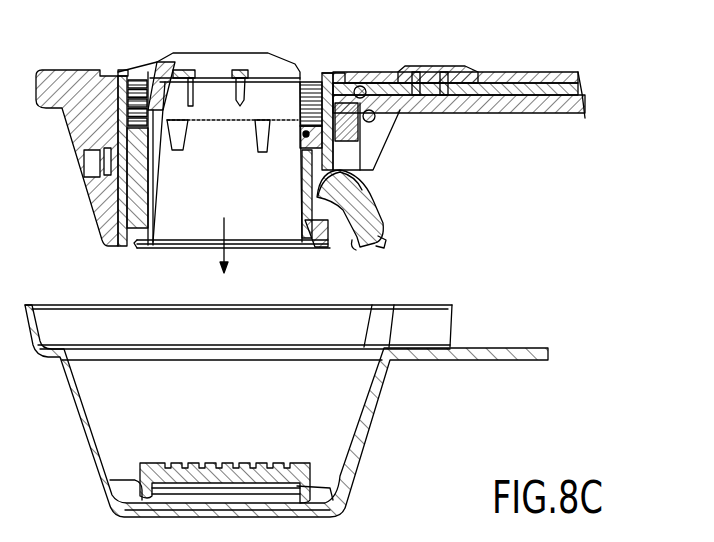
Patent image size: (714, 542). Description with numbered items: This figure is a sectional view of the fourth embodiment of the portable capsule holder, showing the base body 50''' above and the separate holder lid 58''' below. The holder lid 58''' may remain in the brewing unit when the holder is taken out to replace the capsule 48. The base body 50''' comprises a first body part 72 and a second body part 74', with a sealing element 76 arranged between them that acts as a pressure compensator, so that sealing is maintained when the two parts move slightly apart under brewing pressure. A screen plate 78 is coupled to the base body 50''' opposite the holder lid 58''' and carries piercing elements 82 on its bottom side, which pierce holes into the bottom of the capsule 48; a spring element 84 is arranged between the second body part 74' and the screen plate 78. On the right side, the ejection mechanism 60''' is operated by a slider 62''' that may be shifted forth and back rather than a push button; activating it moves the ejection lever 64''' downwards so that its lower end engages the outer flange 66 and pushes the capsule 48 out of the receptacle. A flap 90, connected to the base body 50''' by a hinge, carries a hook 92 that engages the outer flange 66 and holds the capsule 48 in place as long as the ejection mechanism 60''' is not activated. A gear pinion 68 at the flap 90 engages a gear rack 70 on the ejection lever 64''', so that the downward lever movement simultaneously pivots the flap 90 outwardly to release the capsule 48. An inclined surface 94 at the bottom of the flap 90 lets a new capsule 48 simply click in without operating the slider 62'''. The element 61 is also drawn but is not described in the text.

The base body 50''' is at (305, 154).
The screen plate 78 is at (160, 76).
The piercing elements 82 is at (192, 77).
The spring element 84 is at (307, 80).
The ejection mechanism 60''' is at (453, 89).
The slider 62''' is at (438, 51).
The screw 61 is at (368, 133).
The first body part 72 is at (78, 132).
The sealing element 76 is at (95, 168).
The second body part 74' is at (96, 159).
The outer flange 66 is at (140, 248).
The capsule 48 is at (192, 218).
The ejection lever 64''' is at (292, 225).
The gear rack 70 is at (312, 236).
The hook 92 is at (363, 242).
The gear pinion 68 is at (325, 195).
The flap 90 is at (358, 208).
The inclined surface 94 is at (382, 228).
The holder lid 58''' is at (286, 411).